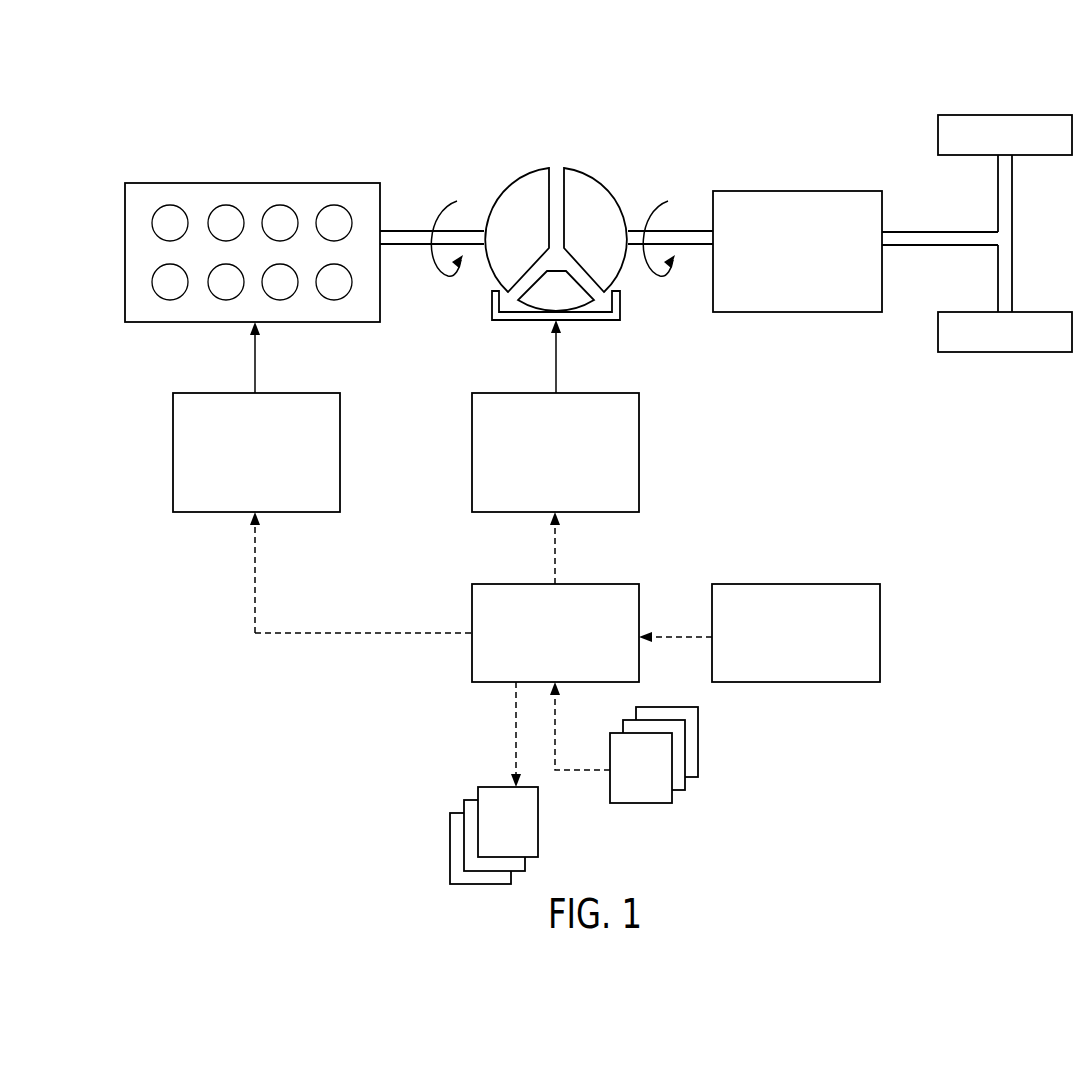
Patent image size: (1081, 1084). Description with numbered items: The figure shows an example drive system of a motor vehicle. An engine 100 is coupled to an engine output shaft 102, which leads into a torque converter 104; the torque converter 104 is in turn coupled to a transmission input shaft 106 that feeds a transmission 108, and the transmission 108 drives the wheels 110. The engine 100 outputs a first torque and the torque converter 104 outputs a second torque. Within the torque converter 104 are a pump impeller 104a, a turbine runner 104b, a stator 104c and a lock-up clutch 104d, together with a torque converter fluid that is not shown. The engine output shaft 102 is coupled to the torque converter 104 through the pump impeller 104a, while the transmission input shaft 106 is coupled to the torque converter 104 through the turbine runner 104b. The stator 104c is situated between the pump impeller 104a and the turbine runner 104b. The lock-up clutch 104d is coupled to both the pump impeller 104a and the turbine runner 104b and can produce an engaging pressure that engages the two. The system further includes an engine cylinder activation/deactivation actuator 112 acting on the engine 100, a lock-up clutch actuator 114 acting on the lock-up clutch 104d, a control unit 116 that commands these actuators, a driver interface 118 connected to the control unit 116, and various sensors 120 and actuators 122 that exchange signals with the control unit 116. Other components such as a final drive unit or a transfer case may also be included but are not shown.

The engine 100 is at (256, 183).
The engine output shaft 102 is at (405, 227).
The torque converter 104 is at (588, 231).
The pump impeller 104a is at (517, 170).
The turbine runner 104b is at (620, 188).
The stator 104c is at (527, 302).
The lock-up clutch 104d is at (620, 300).
The transmission input shaft 106 is at (685, 227).
The transmission 108 is at (795, 191).
The wheels 110 is at (1002, 115).
The engine cylinder activation/deactivation actuator 112 is at (308, 393).
The lock-up clutch actuator 114 is at (585, 393).
The control unit 116 is at (587, 584).
The driver interface 118 is at (795, 584).
The sensors 120 is at (638, 805).
The actuators 122 is at (488, 787).